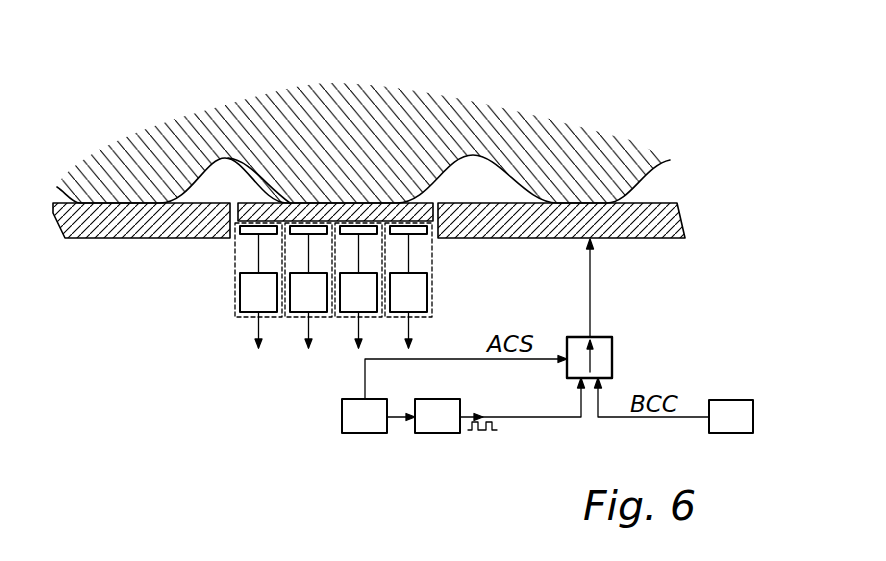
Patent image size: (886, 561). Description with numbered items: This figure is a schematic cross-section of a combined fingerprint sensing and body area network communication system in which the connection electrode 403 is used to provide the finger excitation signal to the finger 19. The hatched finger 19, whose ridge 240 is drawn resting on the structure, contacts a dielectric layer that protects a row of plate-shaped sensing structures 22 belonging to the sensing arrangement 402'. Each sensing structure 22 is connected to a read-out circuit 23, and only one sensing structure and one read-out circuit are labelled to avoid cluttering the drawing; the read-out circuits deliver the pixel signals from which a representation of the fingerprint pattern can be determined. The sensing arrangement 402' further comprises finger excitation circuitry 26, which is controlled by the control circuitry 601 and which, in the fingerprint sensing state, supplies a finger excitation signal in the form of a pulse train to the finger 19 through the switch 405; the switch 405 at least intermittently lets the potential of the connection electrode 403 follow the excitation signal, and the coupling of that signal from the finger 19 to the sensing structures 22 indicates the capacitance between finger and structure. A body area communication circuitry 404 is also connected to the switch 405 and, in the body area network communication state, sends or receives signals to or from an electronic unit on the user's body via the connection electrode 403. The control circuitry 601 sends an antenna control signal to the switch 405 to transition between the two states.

The finger 19 is at (362, 132).
The ridge of finger 240 is at (250, 207).
The connection electrode 403 is at (87, 239).
The sensing arrangement 402' is at (273, 350).
The sensing structure 22 is at (240, 230).
The read-out circuit 23 is at (240, 288).
The switch 405 is at (632, 341).
The body area communication circuitry 404 is at (732, 400).
The control circuitry 601 is at (362, 434).
The finger excitation circuitry 26 is at (437, 434).